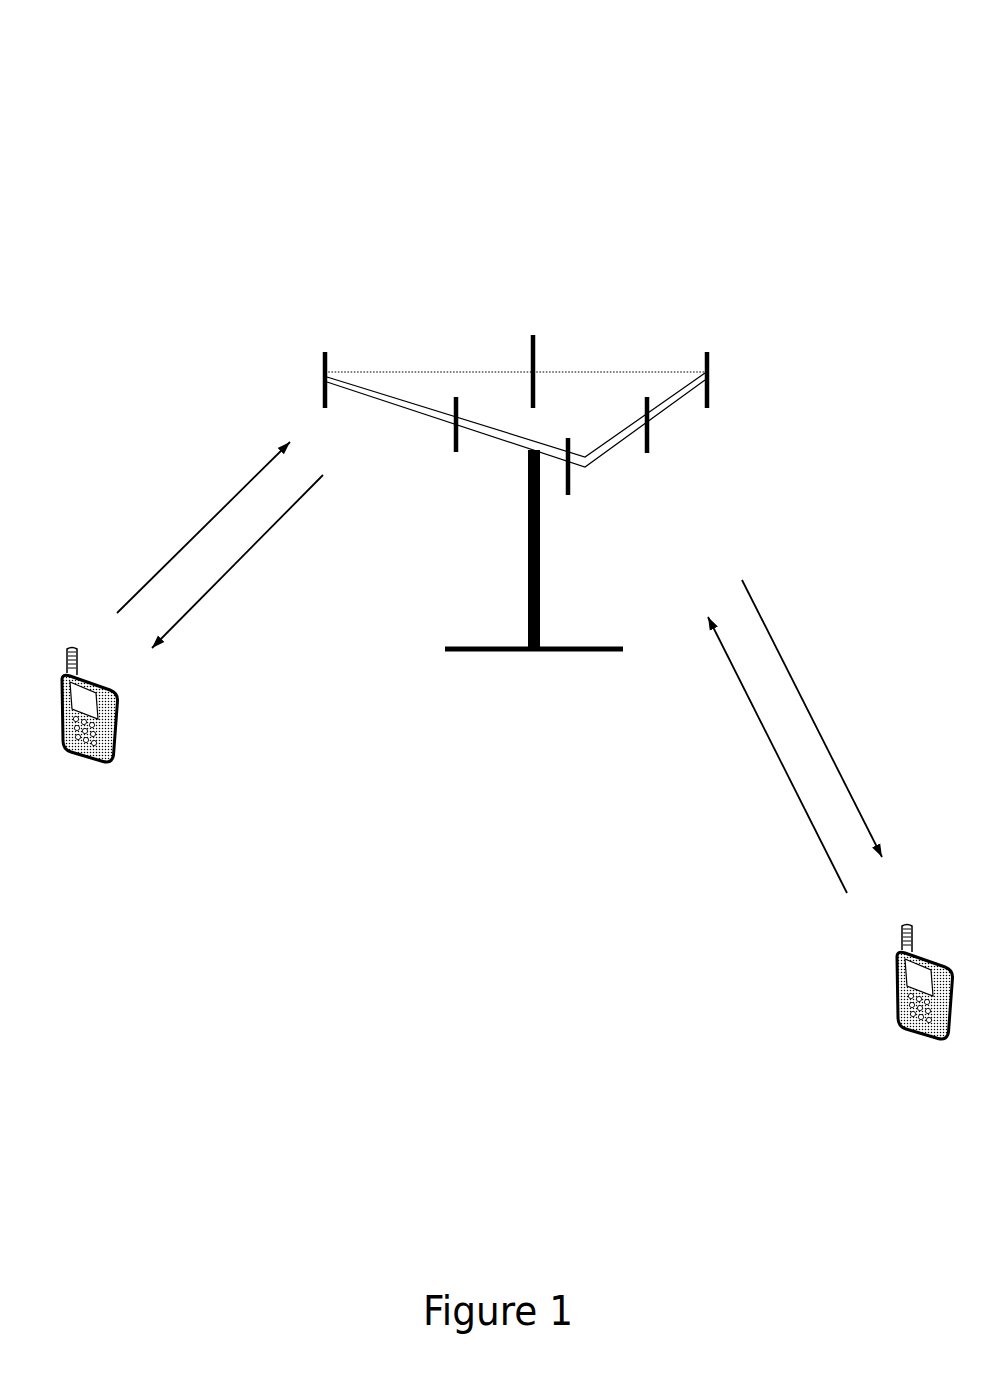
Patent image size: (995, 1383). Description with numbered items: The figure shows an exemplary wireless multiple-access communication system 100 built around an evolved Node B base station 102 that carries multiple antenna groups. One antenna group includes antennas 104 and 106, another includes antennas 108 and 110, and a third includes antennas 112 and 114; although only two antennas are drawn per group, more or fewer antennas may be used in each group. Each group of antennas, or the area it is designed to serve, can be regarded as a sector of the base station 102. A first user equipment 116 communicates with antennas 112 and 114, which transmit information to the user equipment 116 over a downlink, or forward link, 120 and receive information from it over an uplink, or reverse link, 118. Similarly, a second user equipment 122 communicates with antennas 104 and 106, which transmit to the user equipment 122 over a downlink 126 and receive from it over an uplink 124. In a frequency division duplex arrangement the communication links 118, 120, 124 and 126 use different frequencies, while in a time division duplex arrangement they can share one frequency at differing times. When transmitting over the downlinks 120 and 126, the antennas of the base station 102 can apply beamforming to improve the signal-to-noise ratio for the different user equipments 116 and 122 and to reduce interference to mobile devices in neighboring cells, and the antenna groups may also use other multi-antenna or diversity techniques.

The wireless multiple-access communication system 100 is at (812, 107).
The base station 102 is at (498, 650).
The antenna 104 is at (570, 487).
The antenna 106 is at (650, 440).
The antenna 108 is at (710, 395).
The antenna 110 is at (534, 341).
The antenna 112 is at (323, 356).
The antenna 114 is at (456, 450).
The user equipment 116 is at (115, 762).
The uplink 118 is at (207, 520).
The downlink 120 is at (188, 617).
The user equipment 122 is at (898, 1025).
The uplink 124 is at (763, 730).
The downlink 126 is at (795, 685).